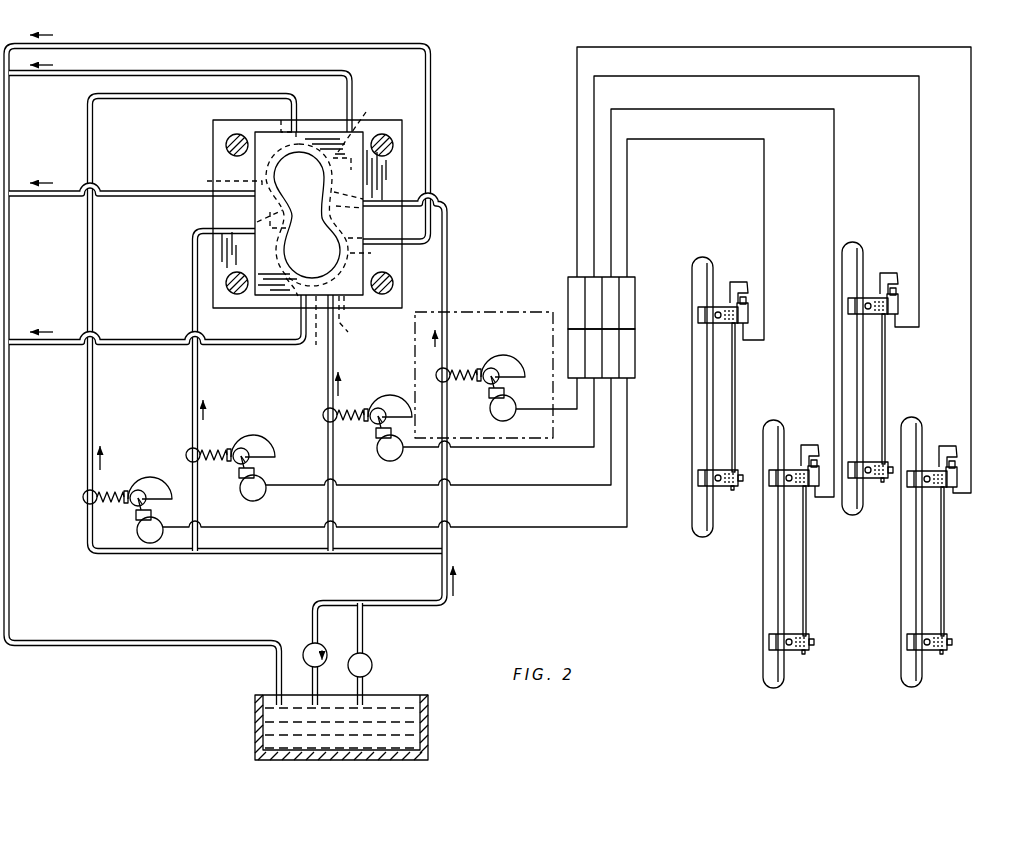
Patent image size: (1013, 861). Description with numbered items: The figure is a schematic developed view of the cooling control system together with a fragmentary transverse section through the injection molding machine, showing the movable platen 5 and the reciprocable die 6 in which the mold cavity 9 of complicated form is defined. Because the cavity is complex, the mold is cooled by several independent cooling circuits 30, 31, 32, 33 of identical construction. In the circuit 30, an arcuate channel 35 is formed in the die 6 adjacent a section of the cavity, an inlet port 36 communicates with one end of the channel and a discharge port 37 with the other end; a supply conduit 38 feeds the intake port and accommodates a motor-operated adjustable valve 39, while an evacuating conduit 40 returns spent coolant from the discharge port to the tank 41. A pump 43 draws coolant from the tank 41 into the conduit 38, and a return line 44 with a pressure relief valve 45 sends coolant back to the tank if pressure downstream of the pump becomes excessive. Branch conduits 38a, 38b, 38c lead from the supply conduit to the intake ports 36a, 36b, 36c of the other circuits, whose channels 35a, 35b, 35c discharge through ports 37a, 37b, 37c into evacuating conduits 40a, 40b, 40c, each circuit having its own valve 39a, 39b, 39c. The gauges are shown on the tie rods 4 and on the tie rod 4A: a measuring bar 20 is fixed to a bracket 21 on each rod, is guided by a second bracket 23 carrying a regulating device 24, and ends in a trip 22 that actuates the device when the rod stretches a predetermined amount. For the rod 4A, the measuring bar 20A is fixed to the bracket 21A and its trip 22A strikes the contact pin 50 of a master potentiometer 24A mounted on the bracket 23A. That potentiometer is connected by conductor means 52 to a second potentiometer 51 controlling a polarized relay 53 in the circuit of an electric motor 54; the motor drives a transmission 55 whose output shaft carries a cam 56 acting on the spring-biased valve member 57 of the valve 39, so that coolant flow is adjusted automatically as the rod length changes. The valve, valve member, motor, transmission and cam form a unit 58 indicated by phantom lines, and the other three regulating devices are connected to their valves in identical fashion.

The tie rod 4 is at (246, 152).
The tie rod 4A is at (386, 133).
The movable platen 5 is at (325, 128).
The reciprocable die 6 is at (341, 302).
The mold cavity 9 is at (317, 262).
The bar 20 is at (735, 373).
The measuring bar 20A is at (943, 553).
The bracket 21 is at (700, 472).
The bracket 21A is at (912, 648).
The trip 22 is at (740, 290).
The trip 22A is at (941, 447).
The second bracket 23 is at (705, 318).
The bracket 23A is at (921, 488).
The regulating device 24 is at (750, 314).
The master potentiometer 24A is at (958, 476).
The cooling circuit 30 is at (451, 252).
The cooling circuit 31 is at (323, 372).
The cooling circuit 32 is at (190, 392).
The cooling circuit 33 is at (85, 440).
The arcuate channel 35 is at (345, 167).
The channel 35a is at (375, 253).
The channel 35b is at (262, 297).
The channel 35c is at (220, 181).
The inlet port 36 is at (348, 195).
The intake port 36a is at (339, 324).
The intake port 36b is at (274, 213).
The intake port 36c is at (285, 122).
The discharge port 37 is at (360, 123).
The discharge port 37a is at (364, 238).
The discharge port 37b is at (306, 343).
The discharge port 37c is at (262, 206).
The supply conduit 38 is at (448, 291).
The branch conduit 38a is at (335, 508).
The branch conduit 38b is at (193, 300).
The branch conduit 38c is at (93, 378).
The motor-operated adjustable valve 39 is at (448, 382).
The valve 39a is at (324, 411).
The valve 39b is at (188, 452).
The valve 39c is at (83, 499).
The evacuating conduit 40 is at (66, 75).
The evacuating conduit 40a is at (98, 44).
The evacuating conduit 40b is at (112, 340).
The evacuating conduit 40c is at (150, 191).
The tank 41 is at (430, 729).
The pump 43 is at (308, 646).
The return line 44 is at (364, 636).
The pressure relief valve 45 is at (373, 665).
The contact pin 50 is at (750, 300).
The second potentiometer 51 is at (572, 283).
The conductor means 52 is at (577, 151).
The polarized relay 53 is at (571, 340).
The electric motor 54 is at (514, 416).
The transmission 55 is at (491, 398).
The cam 56 is at (515, 362).
The spring-biased valve member 57 is at (469, 372).
The unit 58 is at (512, 310).